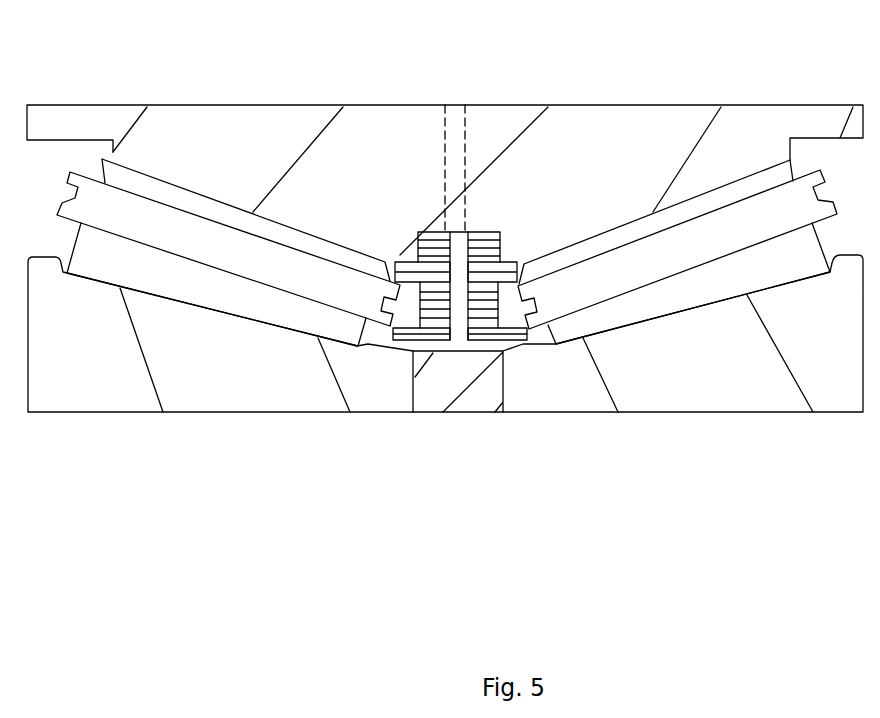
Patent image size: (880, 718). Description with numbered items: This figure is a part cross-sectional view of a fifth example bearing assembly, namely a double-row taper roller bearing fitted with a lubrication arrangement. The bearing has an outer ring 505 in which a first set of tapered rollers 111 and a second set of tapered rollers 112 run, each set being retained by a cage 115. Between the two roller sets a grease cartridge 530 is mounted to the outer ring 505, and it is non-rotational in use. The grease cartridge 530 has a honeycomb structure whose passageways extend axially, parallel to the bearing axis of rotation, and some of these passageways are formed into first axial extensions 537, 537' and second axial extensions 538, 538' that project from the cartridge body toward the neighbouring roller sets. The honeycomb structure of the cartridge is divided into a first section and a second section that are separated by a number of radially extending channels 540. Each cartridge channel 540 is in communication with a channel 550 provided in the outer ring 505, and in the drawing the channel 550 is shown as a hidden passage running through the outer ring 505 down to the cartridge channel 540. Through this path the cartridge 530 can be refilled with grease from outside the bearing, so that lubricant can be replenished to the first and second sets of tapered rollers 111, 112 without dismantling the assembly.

The outer ring 505 is at (238, 155).
The radially extending channel 540 is at (462, 265).
The channel 550 is at (467, 148).
The grease cartridge 530 is at (492, 221).
The first axial extension 537 is at (386, 244).
The second axial extension 538 is at (540, 244).
The first axial extension 537' is at (361, 415).
The second axial extension 538' is at (530, 404).
The cage 115 is at (116, 222).
The first set of tapered rollers 111 is at (200, 296).
The second set of tapered rollers 112 is at (625, 320).